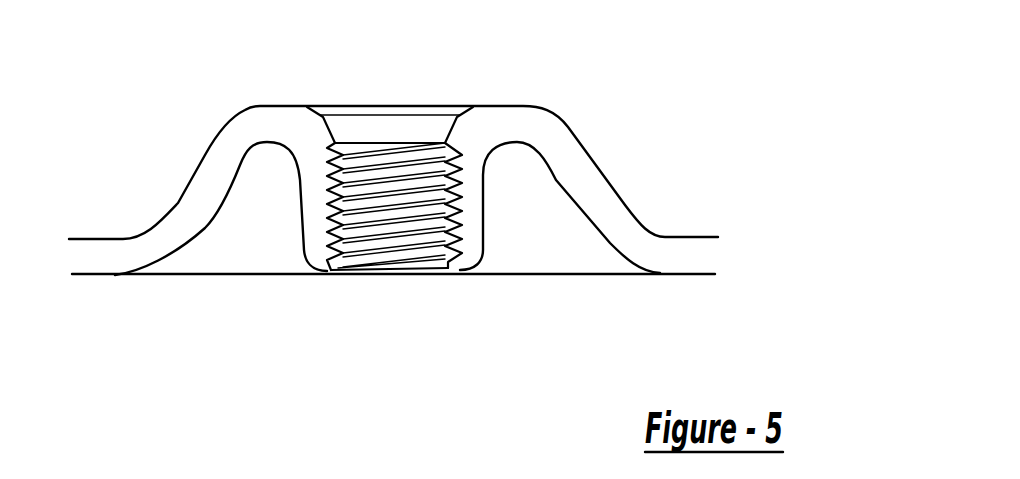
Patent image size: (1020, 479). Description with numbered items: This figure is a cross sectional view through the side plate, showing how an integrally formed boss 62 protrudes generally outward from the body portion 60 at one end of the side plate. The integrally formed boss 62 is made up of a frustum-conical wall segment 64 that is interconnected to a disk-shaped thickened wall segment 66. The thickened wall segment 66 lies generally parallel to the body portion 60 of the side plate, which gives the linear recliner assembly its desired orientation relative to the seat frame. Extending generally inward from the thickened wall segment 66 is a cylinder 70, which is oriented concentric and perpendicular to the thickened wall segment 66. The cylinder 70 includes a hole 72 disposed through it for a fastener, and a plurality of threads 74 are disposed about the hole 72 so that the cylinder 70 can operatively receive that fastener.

The body portion 60 is at (700, 255).
The integrally formed boss 62 is at (393, 138).
The frustum-conical wall segment 64 is at (603, 190).
The thickened wall segment 66 is at (287, 107).
The cylinder 70 is at (429, 178).
The hole 72 is at (390, 180).
The threads 74 is at (342, 212).